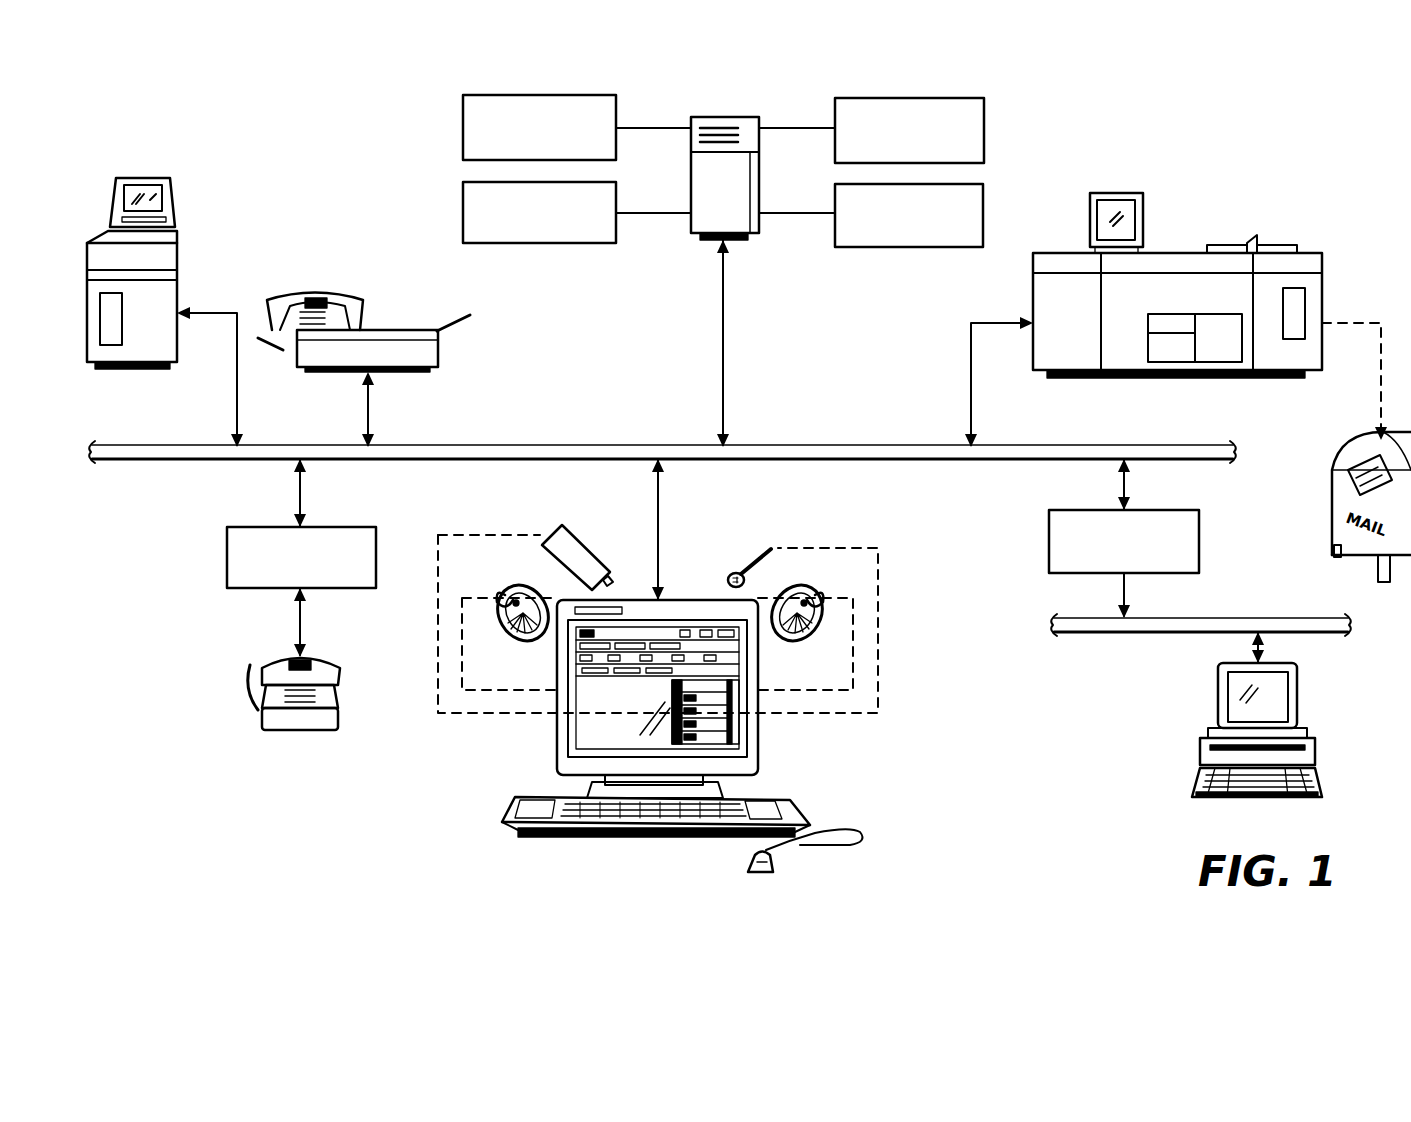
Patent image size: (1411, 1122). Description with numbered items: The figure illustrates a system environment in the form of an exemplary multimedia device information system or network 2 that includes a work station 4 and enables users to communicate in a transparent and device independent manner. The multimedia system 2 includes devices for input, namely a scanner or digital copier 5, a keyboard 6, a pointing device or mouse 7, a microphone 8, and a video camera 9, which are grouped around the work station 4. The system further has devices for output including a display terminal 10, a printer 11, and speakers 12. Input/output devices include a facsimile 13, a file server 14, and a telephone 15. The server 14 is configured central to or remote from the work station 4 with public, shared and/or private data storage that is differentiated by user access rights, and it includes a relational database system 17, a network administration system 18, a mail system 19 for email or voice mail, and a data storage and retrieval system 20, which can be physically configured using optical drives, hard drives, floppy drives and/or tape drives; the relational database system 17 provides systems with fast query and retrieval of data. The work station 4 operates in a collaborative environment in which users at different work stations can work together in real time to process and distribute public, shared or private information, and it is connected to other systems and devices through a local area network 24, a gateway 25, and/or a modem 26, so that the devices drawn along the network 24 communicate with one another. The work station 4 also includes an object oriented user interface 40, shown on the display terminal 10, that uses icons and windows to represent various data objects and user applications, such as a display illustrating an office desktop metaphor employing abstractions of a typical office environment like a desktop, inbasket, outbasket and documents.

The multimedia device information system or network 2 is at (276, 108).
The work station 4 is at (495, 764).
The scanner or digital copier 5 is at (182, 298).
The keyboard 6 is at (758, 795).
The pointing device or mouse 7 is at (773, 870).
The microphone 8 is at (755, 548).
The video camera 9 is at (572, 540).
The display terminal 10 is at (148, 177).
The printer 11 is at (1178, 250).
The speakers 12 is at (525, 648).
The facsimile 13 is at (402, 372).
The file server 14 is at (725, 115).
The telephone 15 is at (300, 733).
The relational database system 17 is at (986, 110).
The network administration system 18 is at (460, 108).
The mail system 19 is at (892, 248).
The data storage and retrieval system 20 is at (553, 243).
The local area network (LAN) 24 is at (808, 445).
The gateway 25 is at (1049, 520).
The modem 26 is at (227, 540).
The object oriented user interface (UI) 40 is at (165, 192).